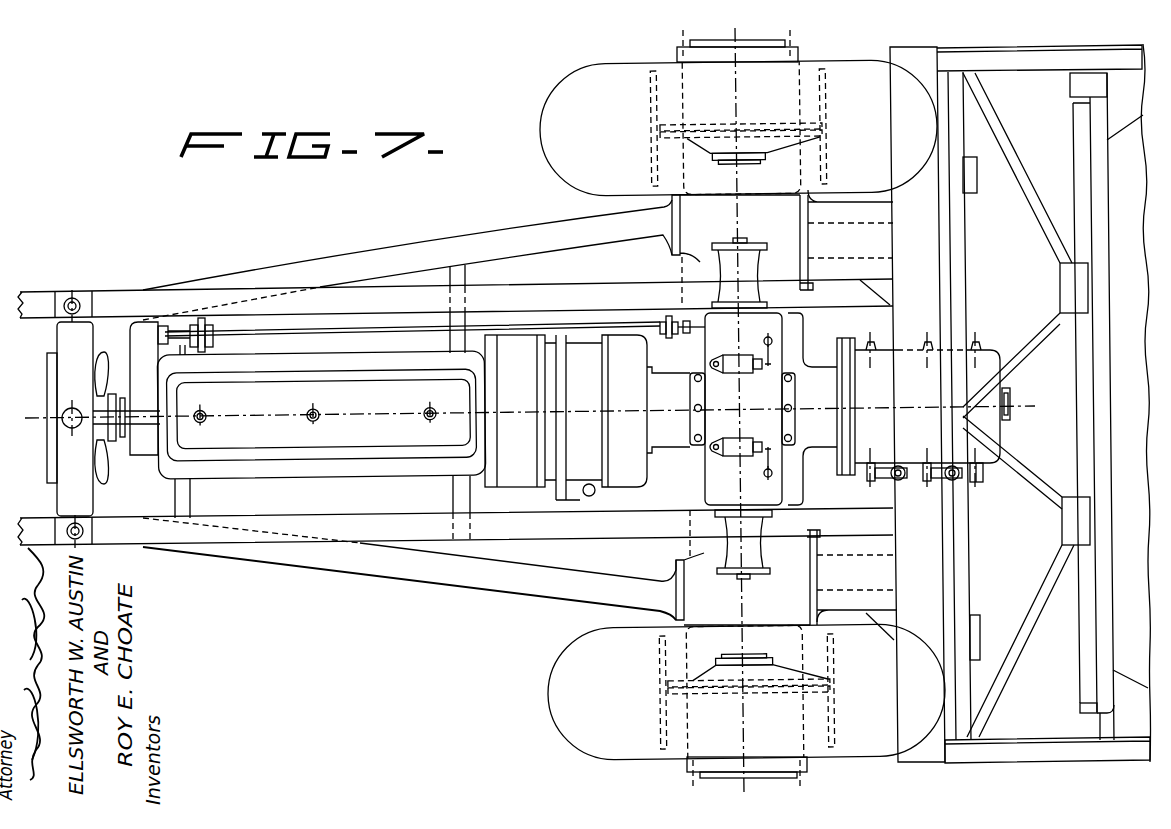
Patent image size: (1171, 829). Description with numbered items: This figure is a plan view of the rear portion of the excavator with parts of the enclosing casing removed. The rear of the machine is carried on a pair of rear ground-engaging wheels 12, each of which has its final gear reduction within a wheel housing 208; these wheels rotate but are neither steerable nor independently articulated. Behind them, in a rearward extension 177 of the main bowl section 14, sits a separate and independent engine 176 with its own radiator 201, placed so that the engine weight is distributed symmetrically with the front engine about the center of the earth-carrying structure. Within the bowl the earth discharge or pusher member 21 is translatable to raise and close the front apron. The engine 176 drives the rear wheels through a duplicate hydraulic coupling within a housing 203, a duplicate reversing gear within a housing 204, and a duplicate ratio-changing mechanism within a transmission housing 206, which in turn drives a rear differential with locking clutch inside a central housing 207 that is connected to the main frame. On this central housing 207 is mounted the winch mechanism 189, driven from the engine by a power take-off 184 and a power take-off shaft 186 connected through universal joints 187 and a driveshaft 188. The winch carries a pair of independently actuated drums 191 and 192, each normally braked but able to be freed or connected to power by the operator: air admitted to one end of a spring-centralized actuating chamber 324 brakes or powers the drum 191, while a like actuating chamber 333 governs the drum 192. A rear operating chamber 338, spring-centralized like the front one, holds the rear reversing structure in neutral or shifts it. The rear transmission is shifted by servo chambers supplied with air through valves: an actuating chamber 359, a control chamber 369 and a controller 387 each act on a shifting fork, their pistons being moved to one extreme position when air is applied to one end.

The rear ground-engaging wheels 12 is at (556, 160).
The main bowl section 14 is at (1028, 737).
The pusher member 21 is at (1100, 620).
The engine 176 is at (318, 476).
The rearward extension 177 is at (288, 547).
The power take-off 184 is at (138, 320).
The power take-off shaft 186 is at (176, 326).
The universal joints 187 is at (206, 326).
The driveshaft 188 is at (371, 329).
The winch mechanism 189 is at (775, 318).
The winch drum 191 is at (756, 272).
The winch drum 192 is at (756, 576).
The radiator 201 is at (84, 516).
The housing 203 is at (528, 489).
The housing 204 is at (596, 465).
The transmission housing 206 is at (999, 433).
The central housing 207 is at (830, 441).
The wheel housing 208 is at (679, 53).
The actuating chamber 324 is at (727, 378).
The actuating chamber 333 is at (734, 463).
The rear operating chamber 338 is at (591, 500).
The actuating chamber 359 is at (971, 482).
The control chamber 369 is at (940, 483).
The controller 387 is at (892, 482).